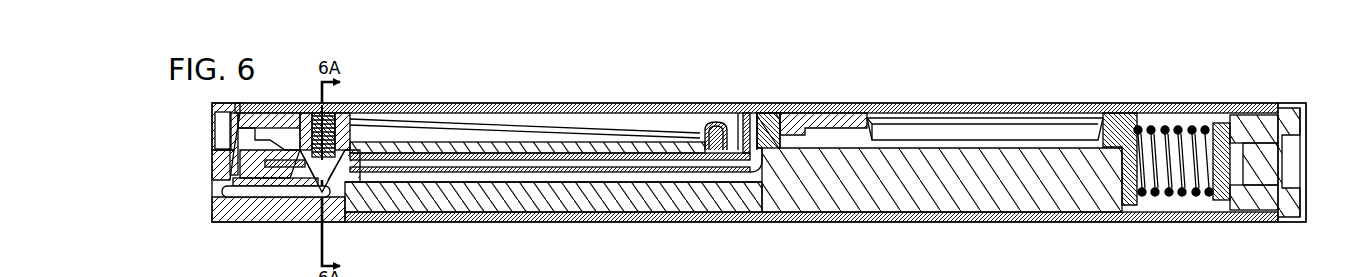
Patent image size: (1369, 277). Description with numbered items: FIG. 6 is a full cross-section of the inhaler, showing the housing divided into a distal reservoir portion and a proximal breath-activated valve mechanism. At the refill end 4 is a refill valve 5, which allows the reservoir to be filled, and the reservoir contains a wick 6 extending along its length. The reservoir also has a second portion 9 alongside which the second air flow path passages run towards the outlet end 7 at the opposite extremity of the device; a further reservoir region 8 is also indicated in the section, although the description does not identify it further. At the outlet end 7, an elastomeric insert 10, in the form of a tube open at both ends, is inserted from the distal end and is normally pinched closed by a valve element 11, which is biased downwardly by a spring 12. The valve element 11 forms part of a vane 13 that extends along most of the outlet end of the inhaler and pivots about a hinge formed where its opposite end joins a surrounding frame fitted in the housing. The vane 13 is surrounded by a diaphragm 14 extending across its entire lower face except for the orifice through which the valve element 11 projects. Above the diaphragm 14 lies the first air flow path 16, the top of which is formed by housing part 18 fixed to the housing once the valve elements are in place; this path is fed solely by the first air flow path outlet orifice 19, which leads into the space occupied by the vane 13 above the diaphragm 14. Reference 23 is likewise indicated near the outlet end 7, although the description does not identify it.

The refill end 4 is at (1212, 88).
The refill valve 5 is at (1222, 200).
The wick 6 is at (938, 195).
The outlet end 7 is at (222, 224).
The piston rod 8 is at (1012, 195).
The second portion of the reservoir 9 is at (448, 200).
The elastomeric insert 10 is at (275, 200).
The valve element 11 is at (345, 200).
The spring 12 is at (326, 126).
The vane 13 is at (415, 128).
The diaphragm 14 is at (714, 124).
The first air flow path 16 is at (638, 124).
The housing part 18 is at (505, 104).
The first air flow path outlet orifice 19 is at (218, 136).
The outlet 23 is at (218, 210).